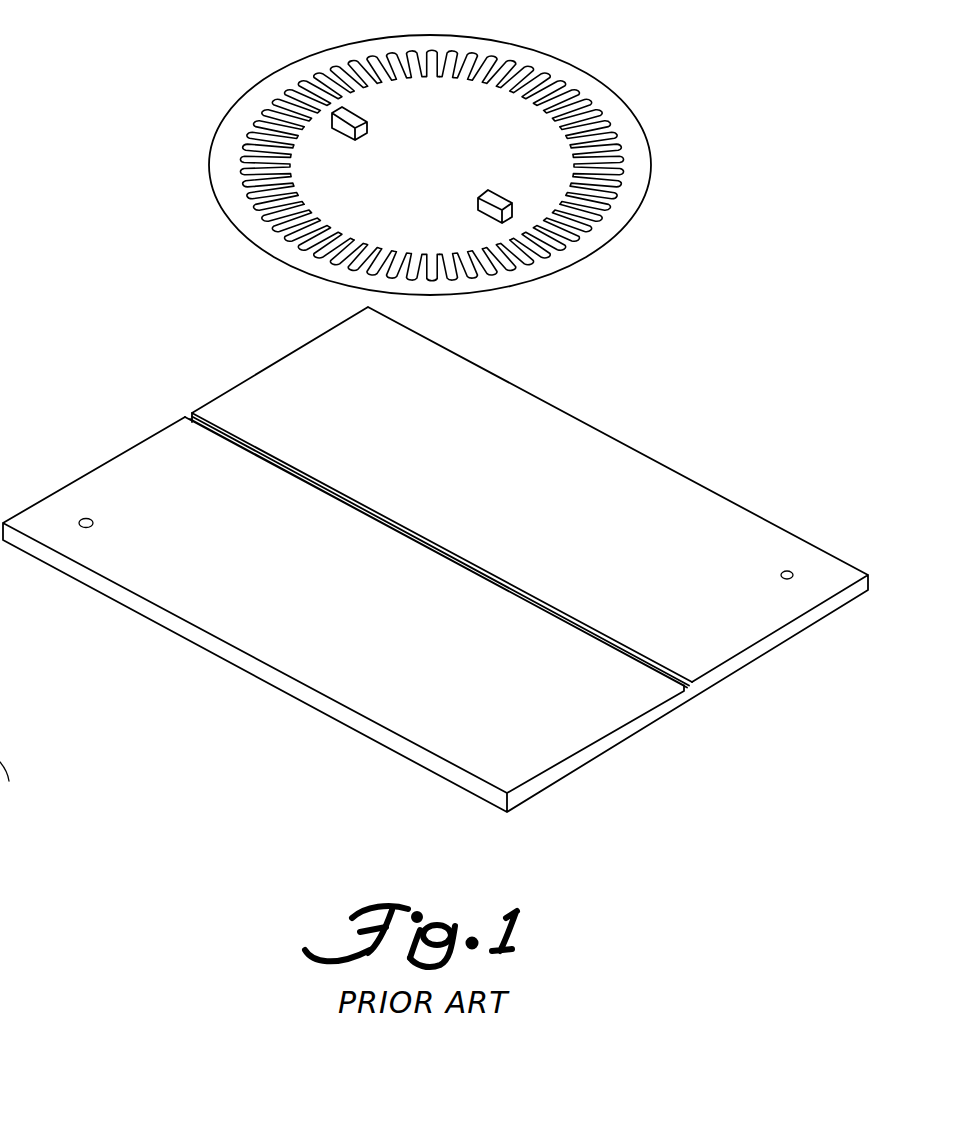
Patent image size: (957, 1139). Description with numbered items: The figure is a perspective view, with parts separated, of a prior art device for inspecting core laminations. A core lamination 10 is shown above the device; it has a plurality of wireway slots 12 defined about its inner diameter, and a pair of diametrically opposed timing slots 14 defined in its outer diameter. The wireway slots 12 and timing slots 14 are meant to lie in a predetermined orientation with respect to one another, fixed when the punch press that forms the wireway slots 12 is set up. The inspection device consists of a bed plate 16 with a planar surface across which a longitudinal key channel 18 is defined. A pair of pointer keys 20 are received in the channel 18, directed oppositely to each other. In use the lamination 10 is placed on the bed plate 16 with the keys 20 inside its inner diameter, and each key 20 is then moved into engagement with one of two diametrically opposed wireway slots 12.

The core lamination 10 is at (443, 152).
The wireway slots 12 is at (490, 63).
The timing slots 14 is at (278, 78).
The bed plate 16 is at (435, 559).
The key channel 18 is at (632, 656).
The pointer keys 20 is at (356, 134).